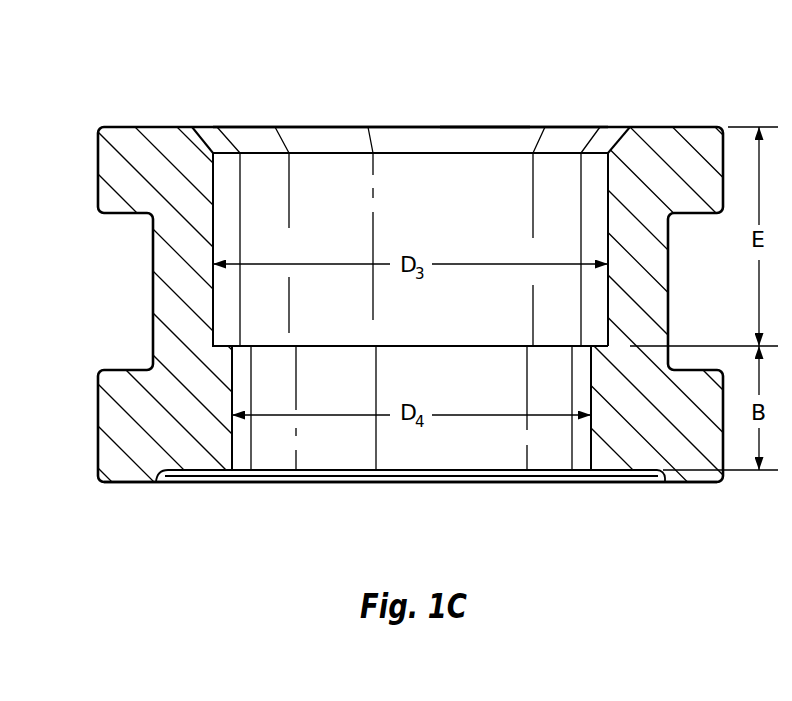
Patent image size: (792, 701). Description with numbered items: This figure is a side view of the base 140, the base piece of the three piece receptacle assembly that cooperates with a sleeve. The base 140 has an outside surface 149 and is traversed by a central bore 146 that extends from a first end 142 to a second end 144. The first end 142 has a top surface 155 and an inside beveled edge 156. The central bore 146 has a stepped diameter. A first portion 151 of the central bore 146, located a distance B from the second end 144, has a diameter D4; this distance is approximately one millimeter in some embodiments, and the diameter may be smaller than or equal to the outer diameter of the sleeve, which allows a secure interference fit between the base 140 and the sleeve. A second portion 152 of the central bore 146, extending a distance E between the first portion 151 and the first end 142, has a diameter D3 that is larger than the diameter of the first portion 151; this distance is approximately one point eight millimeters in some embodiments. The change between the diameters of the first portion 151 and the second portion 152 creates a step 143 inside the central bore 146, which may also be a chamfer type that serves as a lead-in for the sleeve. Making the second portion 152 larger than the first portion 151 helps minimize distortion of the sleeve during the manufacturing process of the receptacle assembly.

The base 140 is at (188, 490).
The first end 142 is at (397, 112).
The step 143 is at (217, 345).
The second end 144 is at (415, 488).
The central bore 146 is at (558, 127).
The outside surface 149 is at (540, 484).
The first portion 151 is at (343, 441).
The second portion 152 is at (318, 178).
The top surface 155 is at (488, 126).
The inside beveled edge 156 is at (214, 150).